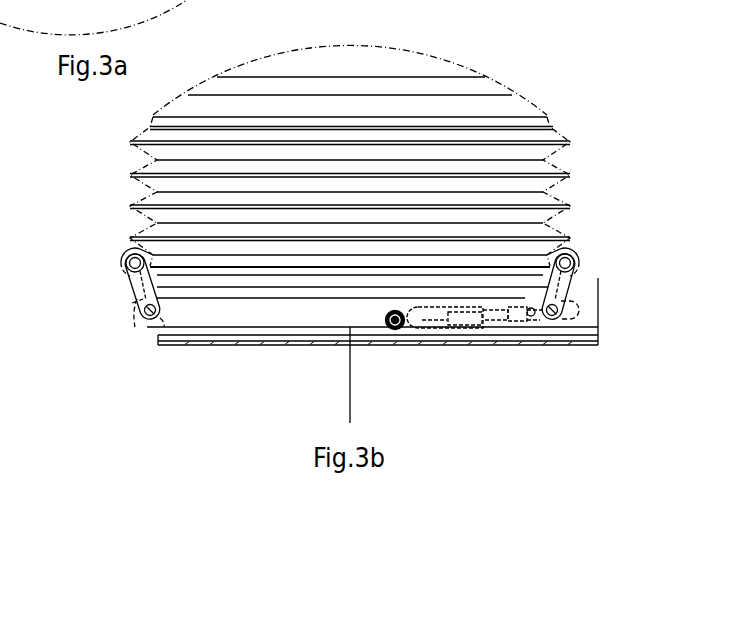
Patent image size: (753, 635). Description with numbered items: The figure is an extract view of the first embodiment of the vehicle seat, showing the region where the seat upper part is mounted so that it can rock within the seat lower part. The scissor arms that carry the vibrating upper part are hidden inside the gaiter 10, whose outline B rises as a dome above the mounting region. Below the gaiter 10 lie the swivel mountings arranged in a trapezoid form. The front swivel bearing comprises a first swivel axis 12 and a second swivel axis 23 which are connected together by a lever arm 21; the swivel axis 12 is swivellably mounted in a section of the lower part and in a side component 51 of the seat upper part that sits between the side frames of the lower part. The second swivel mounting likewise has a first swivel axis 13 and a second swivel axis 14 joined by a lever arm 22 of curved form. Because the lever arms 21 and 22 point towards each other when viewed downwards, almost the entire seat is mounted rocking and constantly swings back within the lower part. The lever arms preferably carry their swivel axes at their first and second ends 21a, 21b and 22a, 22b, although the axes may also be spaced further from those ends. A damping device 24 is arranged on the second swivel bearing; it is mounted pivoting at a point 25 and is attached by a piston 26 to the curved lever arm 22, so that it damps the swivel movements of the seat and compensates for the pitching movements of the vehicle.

The dome outline B is at (397, 45).
The gaiter 10 is at (540, 137).
The first swivel axis 12 is at (128, 252).
The first swivel axis 13 is at (579, 260).
The second swivel axis 14 is at (548, 330).
The lever arm 21 is at (132, 293).
The first end of lever arm 21a is at (124, 270).
The second end of lever arm 21b is at (140, 316).
The lever arm 22 is at (581, 284).
The first end of lever arm 22a is at (581, 258).
The second end of lever arm 22b is at (562, 325).
The second swivel axis 23 is at (145, 329).
The damping device 24 is at (452, 333).
The pivot point 25 is at (394, 331).
The piston 26 is at (507, 325).
The side component 51 is at (283, 308).